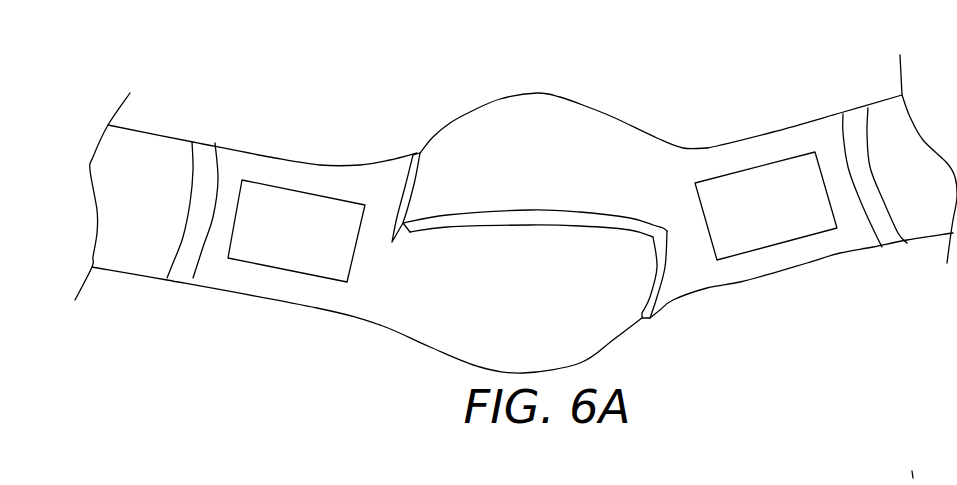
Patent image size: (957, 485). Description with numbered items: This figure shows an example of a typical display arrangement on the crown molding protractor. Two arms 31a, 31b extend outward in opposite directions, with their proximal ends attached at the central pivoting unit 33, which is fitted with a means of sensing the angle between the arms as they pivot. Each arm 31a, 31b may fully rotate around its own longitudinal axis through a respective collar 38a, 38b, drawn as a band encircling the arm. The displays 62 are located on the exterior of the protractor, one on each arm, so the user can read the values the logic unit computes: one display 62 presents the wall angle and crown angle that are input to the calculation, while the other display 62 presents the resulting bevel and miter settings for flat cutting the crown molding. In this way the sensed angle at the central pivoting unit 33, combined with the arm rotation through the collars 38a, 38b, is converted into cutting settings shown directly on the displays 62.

The arm 31a is at (380, 325).
The arm 31b is at (745, 283).
The central pivoting unit 33 is at (615, 118).
The collar 38a is at (203, 150).
The collar 38b is at (850, 120).
The display 62 is at (306, 192).